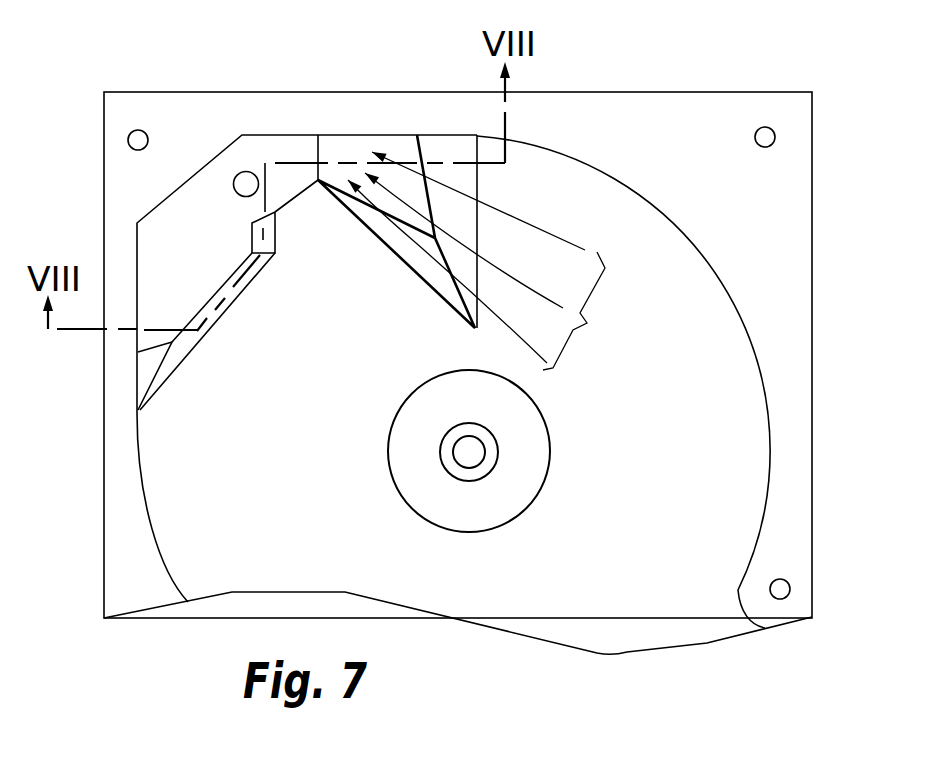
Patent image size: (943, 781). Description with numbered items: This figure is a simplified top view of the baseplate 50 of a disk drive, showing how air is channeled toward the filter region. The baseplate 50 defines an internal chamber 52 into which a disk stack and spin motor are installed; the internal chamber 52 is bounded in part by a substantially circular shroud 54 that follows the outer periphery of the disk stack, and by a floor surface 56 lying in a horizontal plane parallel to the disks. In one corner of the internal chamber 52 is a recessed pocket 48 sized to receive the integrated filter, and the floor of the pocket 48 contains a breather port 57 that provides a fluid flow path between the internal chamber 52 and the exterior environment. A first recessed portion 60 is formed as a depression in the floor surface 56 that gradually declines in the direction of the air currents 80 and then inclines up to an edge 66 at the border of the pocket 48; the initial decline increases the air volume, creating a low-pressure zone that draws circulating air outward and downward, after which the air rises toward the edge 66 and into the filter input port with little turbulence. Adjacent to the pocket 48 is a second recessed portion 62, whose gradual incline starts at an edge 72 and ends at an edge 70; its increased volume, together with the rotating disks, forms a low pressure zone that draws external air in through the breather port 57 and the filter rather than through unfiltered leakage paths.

The recessed pocket 48 is at (227, 216).
The baseplate 50 is at (768, 221).
The internal chamber 52 is at (195, 472).
The shroud 54 is at (764, 352).
The floor surface 56 is at (646, 428).
The breather port 57 is at (237, 172).
The first recessed portion 60 is at (408, 148).
The second recessed portion 62 is at (183, 343).
The edge 66 is at (318, 165).
The edge 70 is at (250, 277).
The edge 72 is at (237, 272).
The air currents 80 is at (484, 261).